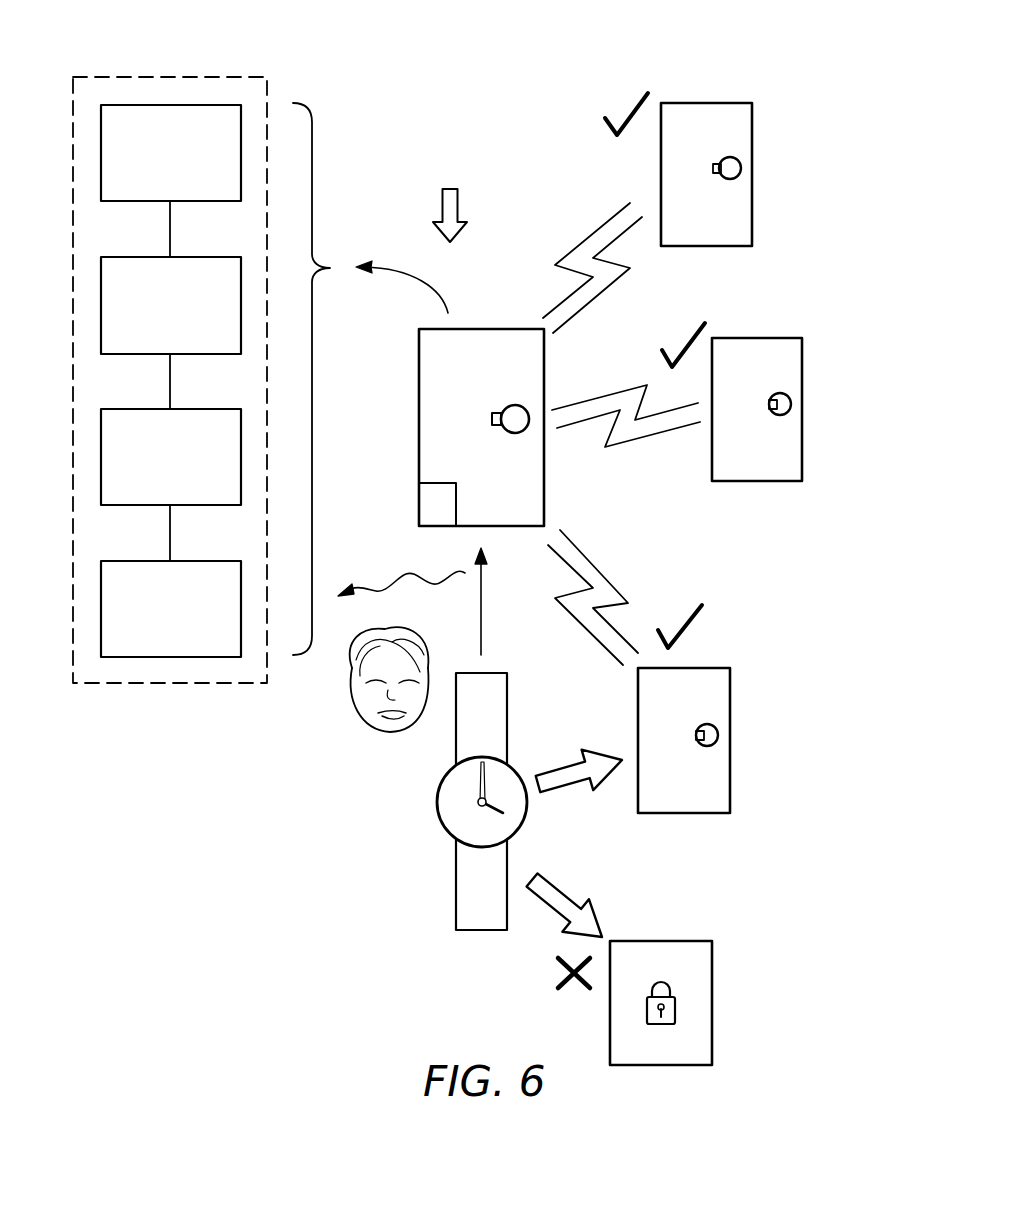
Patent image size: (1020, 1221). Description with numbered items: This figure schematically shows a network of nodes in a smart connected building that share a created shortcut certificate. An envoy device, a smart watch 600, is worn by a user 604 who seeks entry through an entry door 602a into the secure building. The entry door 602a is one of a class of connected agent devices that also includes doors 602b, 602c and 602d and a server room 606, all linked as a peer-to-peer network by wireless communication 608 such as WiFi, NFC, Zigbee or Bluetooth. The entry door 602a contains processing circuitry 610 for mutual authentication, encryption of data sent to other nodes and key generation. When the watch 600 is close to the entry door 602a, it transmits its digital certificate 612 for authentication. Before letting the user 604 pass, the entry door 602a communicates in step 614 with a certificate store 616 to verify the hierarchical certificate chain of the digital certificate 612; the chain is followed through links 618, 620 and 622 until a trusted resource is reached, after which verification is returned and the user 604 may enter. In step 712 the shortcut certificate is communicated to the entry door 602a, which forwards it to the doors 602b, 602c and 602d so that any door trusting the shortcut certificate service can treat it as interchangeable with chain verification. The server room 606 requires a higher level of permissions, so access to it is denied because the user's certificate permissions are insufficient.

The smart watch 600 is at (437, 798).
The entry door 602a is at (545, 508).
The door 602b is at (752, 115).
The door 602c is at (802, 352).
The door 602d is at (730, 684).
The user 604 is at (356, 712).
The server room 606 is at (712, 951).
The wireless communication 608 is at (580, 243).
The processing circuitry 610 is at (419, 494).
The digital certificate 612 is at (171, 609).
The communication to certificate store 614 is at (378, 583).
The certificate store 616 is at (238, 77).
The certificate chain link 618 is at (171, 457).
The certificate chain link 620 is at (171, 305).
The certificate chain link 622 is at (171, 153).
The shortcut certificate communication step 712 is at (451, 201).